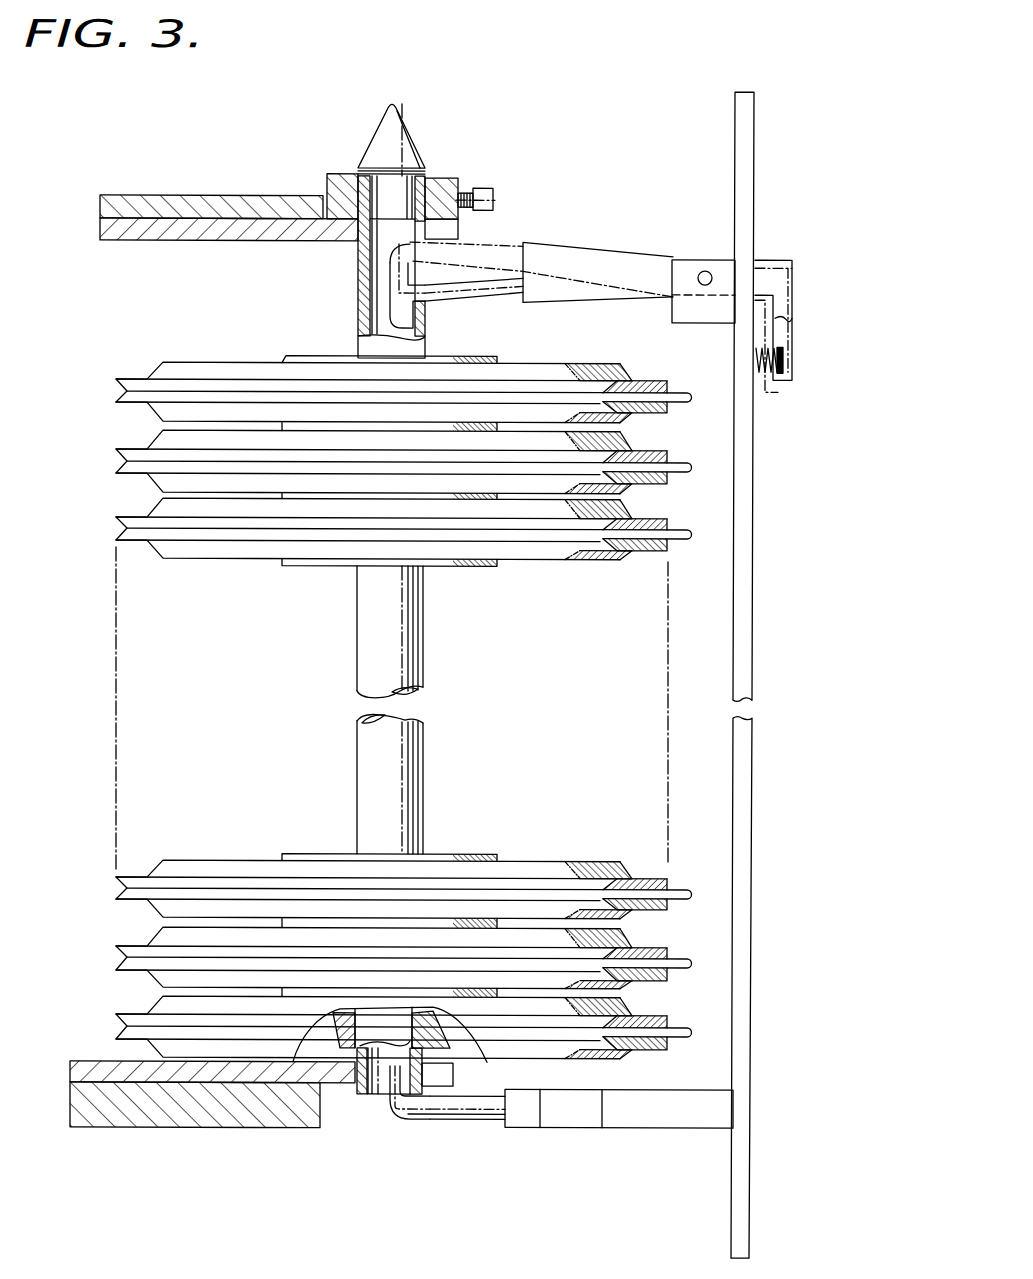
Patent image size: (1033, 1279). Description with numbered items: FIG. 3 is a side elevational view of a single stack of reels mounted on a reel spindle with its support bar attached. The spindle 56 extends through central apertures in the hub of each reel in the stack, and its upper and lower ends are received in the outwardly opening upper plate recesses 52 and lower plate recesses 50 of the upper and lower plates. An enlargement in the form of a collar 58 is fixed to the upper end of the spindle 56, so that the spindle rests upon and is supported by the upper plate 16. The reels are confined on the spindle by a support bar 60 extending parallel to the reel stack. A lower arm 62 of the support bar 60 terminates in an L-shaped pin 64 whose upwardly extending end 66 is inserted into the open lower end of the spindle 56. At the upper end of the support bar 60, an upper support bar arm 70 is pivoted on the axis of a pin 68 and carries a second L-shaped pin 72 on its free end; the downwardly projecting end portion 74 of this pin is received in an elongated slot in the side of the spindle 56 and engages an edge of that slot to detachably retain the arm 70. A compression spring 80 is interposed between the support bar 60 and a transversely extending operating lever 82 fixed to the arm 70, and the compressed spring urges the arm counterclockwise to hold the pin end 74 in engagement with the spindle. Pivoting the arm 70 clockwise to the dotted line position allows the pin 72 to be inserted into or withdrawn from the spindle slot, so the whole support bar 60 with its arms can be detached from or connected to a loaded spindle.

The upper plate 16 is at (252, 242).
The lower plate recesses 50 is at (453, 1077).
The upper plate recesses 52 is at (458, 228).
The spindle 56 is at (424, 730).
The collar 58 is at (334, 172).
The support bar 60 is at (751, 727).
The lower arm 62 is at (653, 1129).
The L-shaped pin 64 is at (450, 1119).
The upwardly extending end 66 is at (390, 1084).
The pin 68 is at (707, 271).
The upper support bar arm 70 is at (575, 272).
The L-shaped pin 72 is at (468, 264).
The downwardly projecting end portion 74 is at (397, 312).
The compression spring 80 is at (784, 366).
The operating lever 82 is at (791, 339).